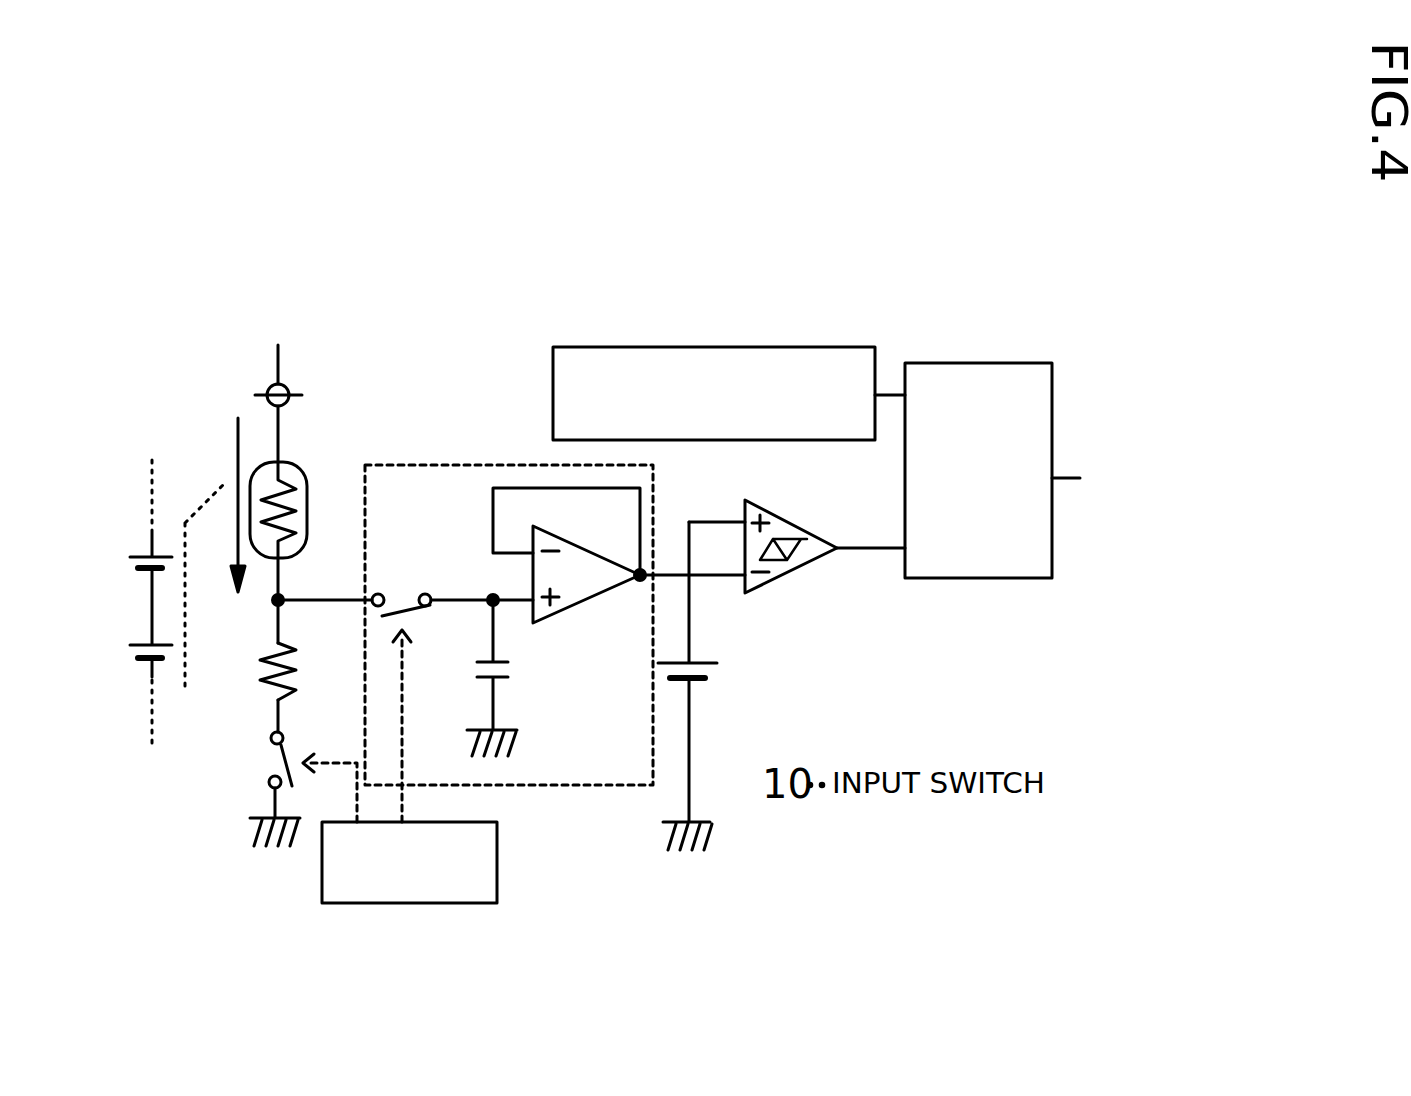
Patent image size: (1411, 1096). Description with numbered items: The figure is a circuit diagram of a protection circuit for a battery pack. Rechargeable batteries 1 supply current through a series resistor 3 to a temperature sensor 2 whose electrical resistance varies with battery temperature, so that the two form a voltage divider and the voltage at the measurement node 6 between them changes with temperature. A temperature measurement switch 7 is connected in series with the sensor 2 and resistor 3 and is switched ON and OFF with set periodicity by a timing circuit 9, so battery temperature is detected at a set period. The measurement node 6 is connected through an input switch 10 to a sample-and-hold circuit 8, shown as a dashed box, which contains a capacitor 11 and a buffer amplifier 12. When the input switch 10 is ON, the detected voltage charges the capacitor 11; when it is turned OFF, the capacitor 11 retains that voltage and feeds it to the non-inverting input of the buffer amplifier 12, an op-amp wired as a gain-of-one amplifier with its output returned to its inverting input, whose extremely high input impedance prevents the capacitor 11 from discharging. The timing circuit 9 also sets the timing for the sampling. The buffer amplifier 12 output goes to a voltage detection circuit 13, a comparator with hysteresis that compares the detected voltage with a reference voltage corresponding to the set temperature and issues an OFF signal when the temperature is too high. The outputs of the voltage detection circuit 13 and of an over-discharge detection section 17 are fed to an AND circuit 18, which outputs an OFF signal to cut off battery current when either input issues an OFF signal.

The rechargeable battery 1 is at (145, 552).
The temperature sensor 2 is at (307, 483).
The series resistor 3 is at (263, 686).
The measurement node 6 is at (279, 591).
The temperature measurement switch 7 is at (266, 770).
The sample-and-hold circuit 8 is at (623, 788).
The timing circuit 9 is at (497, 867).
The input switch 10 is at (400, 606).
The capacitor 11 is at (498, 678).
The buffer amplifier 12 is at (597, 590).
The voltage detection circuit 13 is at (783, 575).
The over-discharge detection section 17 is at (553, 393).
The AND circuit 18 is at (912, 578).